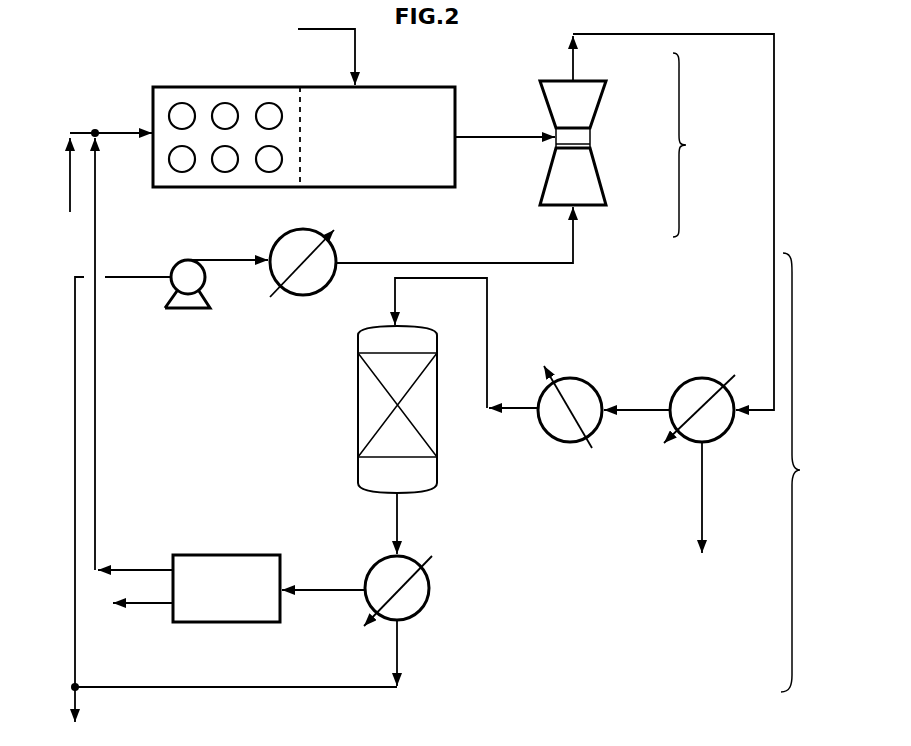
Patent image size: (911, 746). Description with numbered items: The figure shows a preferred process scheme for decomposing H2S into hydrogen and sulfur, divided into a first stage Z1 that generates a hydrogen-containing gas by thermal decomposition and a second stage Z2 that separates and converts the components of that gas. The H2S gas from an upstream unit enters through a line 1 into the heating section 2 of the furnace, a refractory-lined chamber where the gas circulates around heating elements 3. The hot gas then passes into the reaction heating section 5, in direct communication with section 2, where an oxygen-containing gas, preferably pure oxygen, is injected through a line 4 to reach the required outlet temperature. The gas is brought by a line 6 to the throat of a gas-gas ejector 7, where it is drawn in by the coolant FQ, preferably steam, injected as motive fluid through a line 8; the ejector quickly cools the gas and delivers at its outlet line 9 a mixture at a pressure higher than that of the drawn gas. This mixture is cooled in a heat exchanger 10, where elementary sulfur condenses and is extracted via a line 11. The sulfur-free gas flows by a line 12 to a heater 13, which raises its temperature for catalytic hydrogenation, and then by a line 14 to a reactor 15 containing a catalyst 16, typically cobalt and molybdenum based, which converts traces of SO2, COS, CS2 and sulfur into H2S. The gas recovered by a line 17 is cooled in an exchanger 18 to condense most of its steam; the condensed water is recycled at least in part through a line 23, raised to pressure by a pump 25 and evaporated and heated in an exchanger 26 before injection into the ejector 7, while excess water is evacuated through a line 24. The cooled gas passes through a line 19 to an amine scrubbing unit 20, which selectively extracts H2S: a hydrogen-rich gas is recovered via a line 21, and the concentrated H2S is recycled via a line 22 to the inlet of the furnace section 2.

The line 1 is at (88, 130).
The heating section 2 is at (181, 85).
The heating elements 3 is at (228, 124).
The line 4 is at (322, 36).
The reaction heating section 5 is at (395, 86).
The line 6 is at (498, 136).
The gas-gas ejector 7 is at (575, 108).
The line 8 is at (573, 228).
The outlet line 9 is at (773, 62).
The heat exchanger 10 is at (698, 378).
The line 11 is at (702, 513).
The line 12 is at (645, 408).
The heater 13 is at (570, 378).
The line 14 is at (487, 300).
The reactor 15 is at (357, 392).
The catalyst 16 is at (385, 382).
The line 17 is at (397, 515).
The exchanger 18 is at (428, 590).
The line 19 is at (331, 588).
The amine scrubbing unit 20 is at (214, 595).
The line 21 is at (140, 607).
The line 22 is at (96, 422).
The line 23 is at (205, 685).
The line 24 is at (78, 703).
The pump 25 is at (205, 277).
The exchanger 26 is at (330, 287).
The stage Z1 is at (696, 145).
The stage Z2 is at (808, 472).